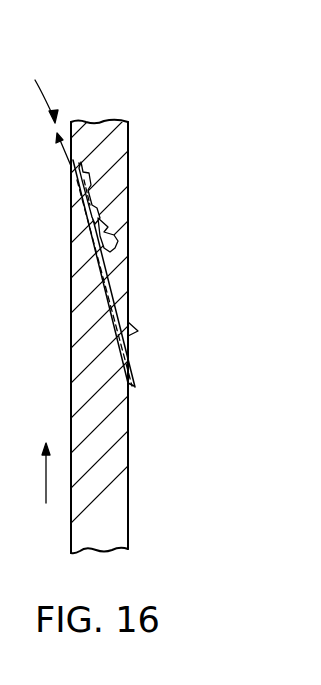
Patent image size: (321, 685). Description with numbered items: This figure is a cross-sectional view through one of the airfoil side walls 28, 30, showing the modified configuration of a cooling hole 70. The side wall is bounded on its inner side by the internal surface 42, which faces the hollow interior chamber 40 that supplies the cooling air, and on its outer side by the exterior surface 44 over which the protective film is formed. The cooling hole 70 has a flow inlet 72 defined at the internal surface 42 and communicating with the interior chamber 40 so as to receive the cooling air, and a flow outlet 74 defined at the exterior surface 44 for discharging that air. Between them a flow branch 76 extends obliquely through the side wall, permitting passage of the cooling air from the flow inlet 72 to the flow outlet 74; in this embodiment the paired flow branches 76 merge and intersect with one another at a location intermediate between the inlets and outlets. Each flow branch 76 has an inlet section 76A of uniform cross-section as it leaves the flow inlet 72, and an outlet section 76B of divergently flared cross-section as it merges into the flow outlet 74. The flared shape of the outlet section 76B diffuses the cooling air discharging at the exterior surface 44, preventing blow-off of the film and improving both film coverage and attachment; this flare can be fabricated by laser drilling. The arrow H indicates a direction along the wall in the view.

The side wall 28 is at (129, 297).
The side wall 30 is at (92, 121).
The hollow interior chamber 40 is at (182, 240).
The internal surface 42 is at (129, 144).
The exterior surface 44 is at (72, 522).
The cooling hole 70 is at (31, 87).
The flow inlet 72 is at (131, 348).
The flow outlet 74 is at (72, 194).
The flow branch 76 is at (98, 280).
The inlet section 76A is at (117, 232).
The outlet section 76B is at (88, 179).
The height direction H is at (46, 478).